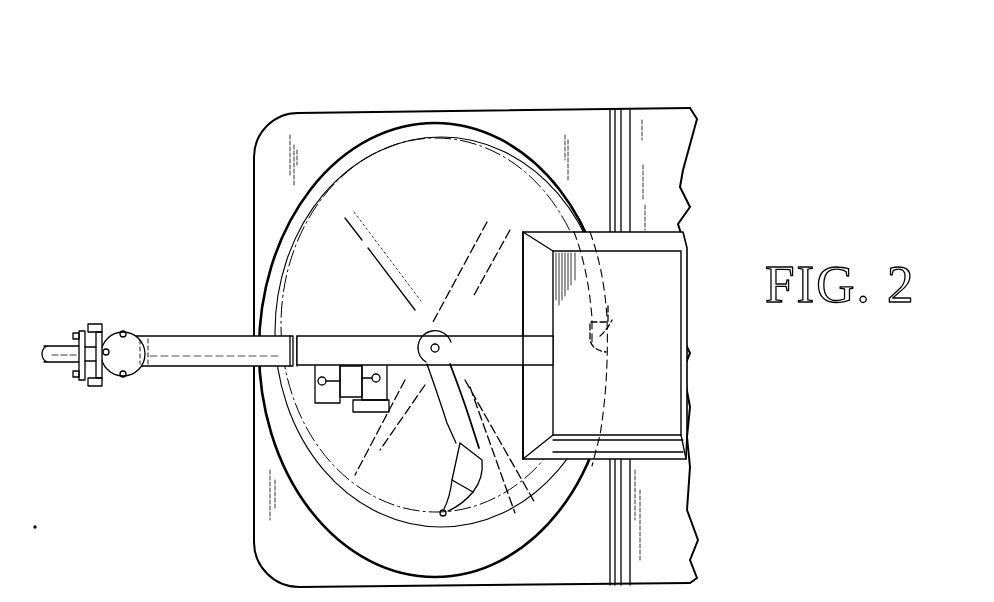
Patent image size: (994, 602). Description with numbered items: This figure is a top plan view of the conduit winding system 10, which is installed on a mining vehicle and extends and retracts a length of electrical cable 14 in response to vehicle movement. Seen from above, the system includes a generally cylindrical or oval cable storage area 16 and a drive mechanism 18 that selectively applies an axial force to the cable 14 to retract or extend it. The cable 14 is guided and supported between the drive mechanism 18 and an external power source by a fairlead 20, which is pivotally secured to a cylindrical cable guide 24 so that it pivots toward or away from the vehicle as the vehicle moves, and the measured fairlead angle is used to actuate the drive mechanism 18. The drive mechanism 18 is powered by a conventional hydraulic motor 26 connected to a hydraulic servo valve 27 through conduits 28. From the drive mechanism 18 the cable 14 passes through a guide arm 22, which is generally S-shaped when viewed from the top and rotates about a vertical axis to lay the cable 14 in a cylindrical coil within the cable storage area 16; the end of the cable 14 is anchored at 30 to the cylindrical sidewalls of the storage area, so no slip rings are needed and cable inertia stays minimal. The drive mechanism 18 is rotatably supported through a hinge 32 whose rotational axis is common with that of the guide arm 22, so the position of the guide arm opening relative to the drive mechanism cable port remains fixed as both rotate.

The conduit winding system 10 is at (471, 82).
The cable 14 is at (57, 344).
The cable storage area 16 is at (425, 246).
The drive mechanism 18 is at (338, 338).
The fairlead 20 is at (90, 328).
The guide arm 22 is at (460, 445).
The cylindrical cable guide 24 is at (188, 340).
The hydraulic motor 26 is at (348, 405).
The hydraulic servo valve 27 is at (347, 393).
The conduits 28 is at (322, 383).
The cable anchor 30 is at (620, 312).
The hinge 32 is at (440, 344).